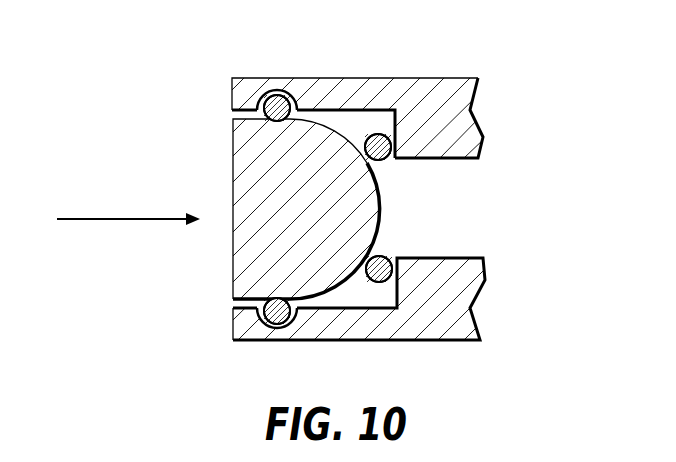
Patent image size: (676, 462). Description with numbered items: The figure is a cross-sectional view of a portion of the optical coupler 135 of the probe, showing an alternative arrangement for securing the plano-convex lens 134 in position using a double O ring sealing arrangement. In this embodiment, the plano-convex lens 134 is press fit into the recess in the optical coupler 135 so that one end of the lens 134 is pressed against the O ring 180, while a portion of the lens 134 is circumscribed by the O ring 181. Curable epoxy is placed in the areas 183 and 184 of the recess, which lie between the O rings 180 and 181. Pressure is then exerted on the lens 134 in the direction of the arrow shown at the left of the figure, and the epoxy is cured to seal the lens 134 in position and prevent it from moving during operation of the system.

The plano-convex lens 134 is at (340, 134).
The optical coupler 135 is at (462, 93).
The O ring 180 is at (384, 257).
The O ring 181 is at (277, 93).
The area of the recess 183 is at (367, 298).
The area of the recess 184 is at (377, 119).